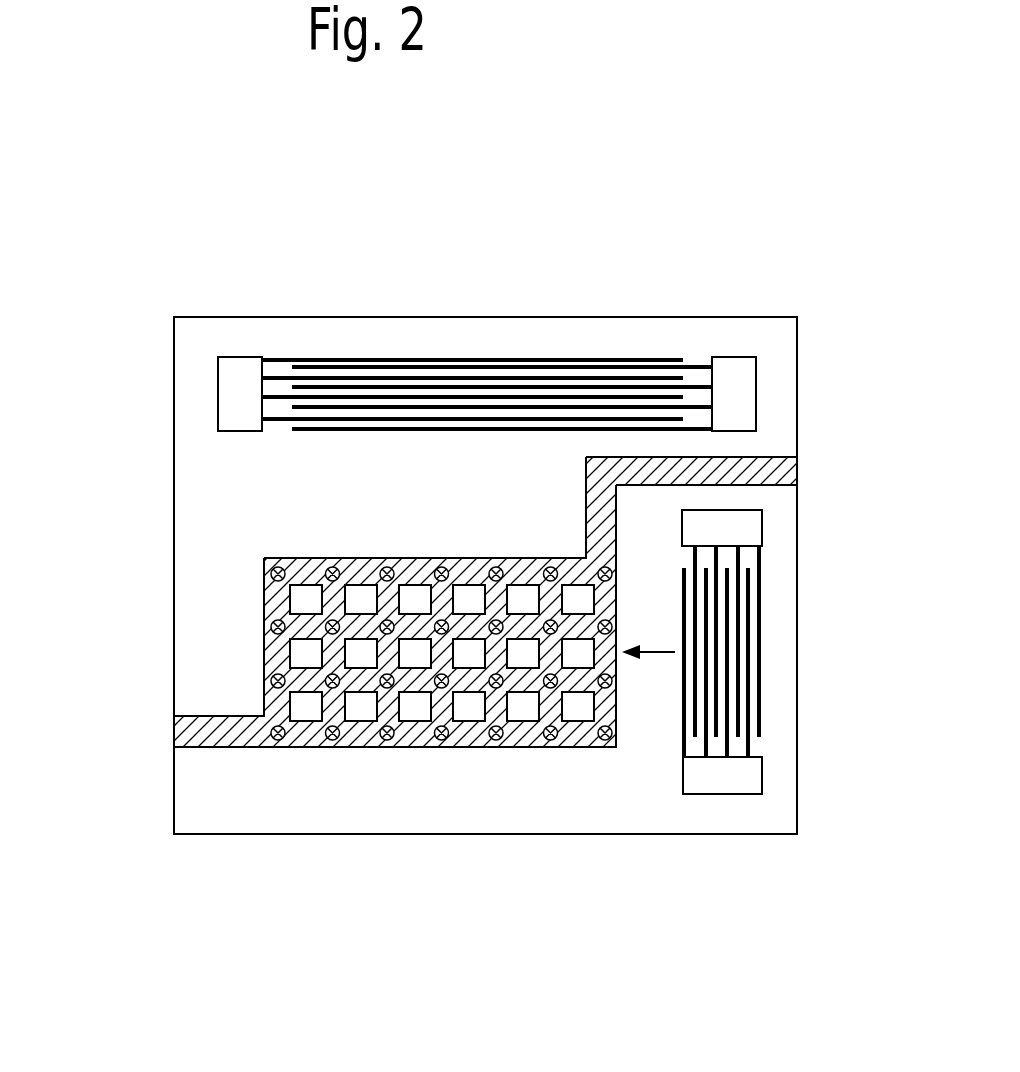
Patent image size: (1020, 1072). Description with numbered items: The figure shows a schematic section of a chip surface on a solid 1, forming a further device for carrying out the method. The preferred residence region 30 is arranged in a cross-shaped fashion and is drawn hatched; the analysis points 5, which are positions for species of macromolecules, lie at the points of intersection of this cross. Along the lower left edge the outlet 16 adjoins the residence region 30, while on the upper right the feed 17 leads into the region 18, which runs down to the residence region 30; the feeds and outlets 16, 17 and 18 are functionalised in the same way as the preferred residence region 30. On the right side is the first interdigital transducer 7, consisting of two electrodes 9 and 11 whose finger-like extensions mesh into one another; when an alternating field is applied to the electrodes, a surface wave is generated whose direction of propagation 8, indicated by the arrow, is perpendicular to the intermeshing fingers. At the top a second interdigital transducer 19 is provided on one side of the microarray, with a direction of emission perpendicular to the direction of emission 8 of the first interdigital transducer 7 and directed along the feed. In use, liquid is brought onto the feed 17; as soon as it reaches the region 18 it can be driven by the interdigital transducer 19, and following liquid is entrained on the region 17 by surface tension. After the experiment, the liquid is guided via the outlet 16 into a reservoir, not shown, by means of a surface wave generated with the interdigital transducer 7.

The solid 1 is at (202, 498).
The second interdigital transducer 19 is at (518, 340).
The feed 17 is at (762, 458).
The region 18 is at (595, 503).
The electrode 9 is at (745, 528).
The interdigital transducer 7 is at (792, 639).
The electrode 11 is at (745, 777).
The direction of propagation 8 is at (653, 652).
The analysis points 5 is at (548, 740).
The preferred residence region 30 is at (262, 604).
The outlet 16 is at (208, 740).